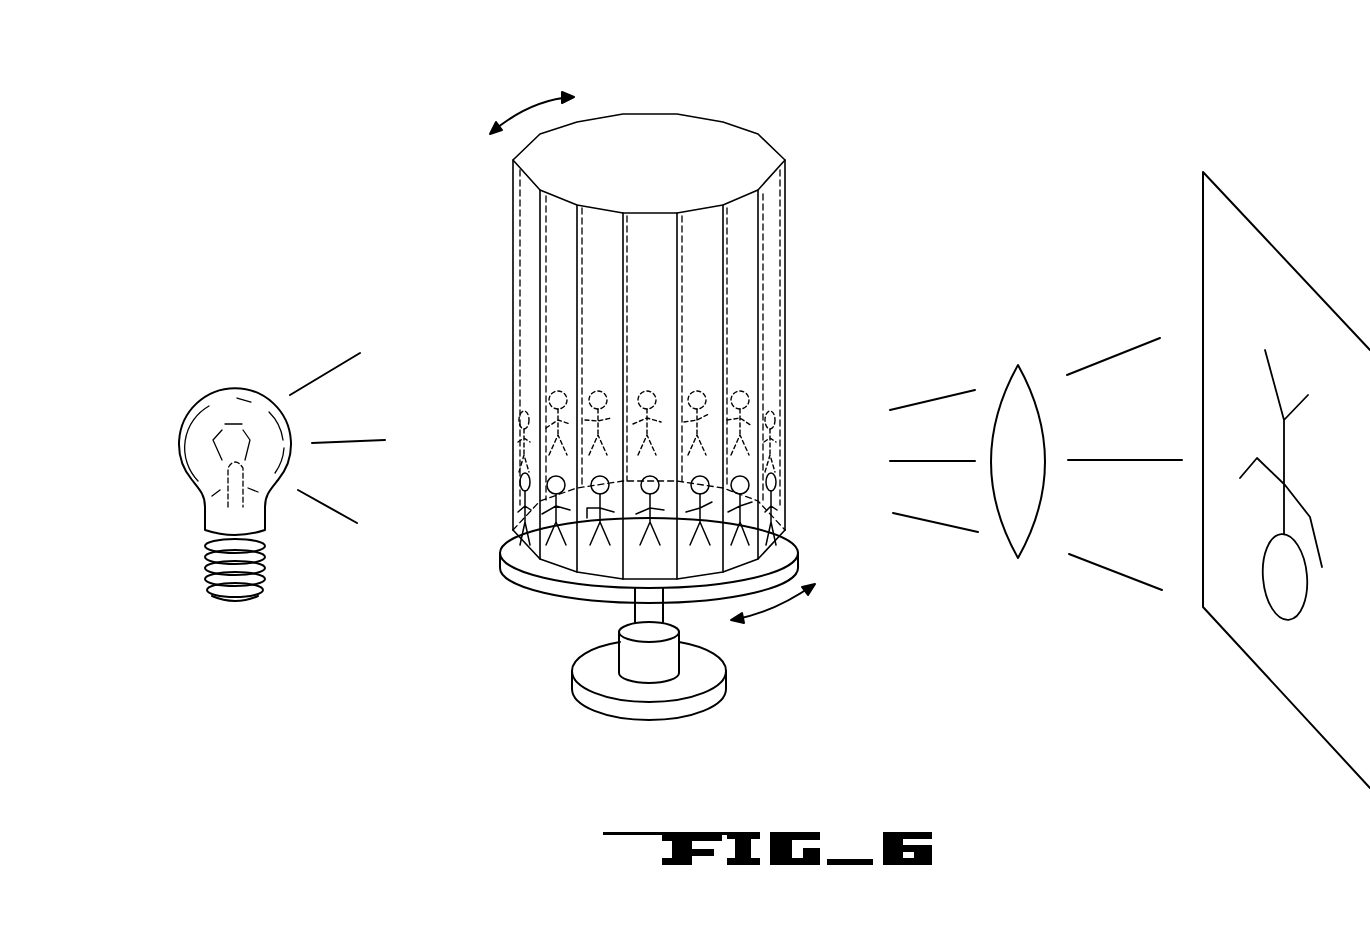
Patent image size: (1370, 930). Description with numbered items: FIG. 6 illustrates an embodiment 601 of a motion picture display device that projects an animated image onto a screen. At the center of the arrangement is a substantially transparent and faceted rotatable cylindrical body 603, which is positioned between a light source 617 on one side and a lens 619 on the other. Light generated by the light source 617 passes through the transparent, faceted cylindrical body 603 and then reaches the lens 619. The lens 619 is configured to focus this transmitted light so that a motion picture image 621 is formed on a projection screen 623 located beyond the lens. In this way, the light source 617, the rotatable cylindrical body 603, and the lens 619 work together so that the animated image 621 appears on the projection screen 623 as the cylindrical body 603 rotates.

The embodiment 601 is at (1142, 59).
The cylindrical body 603 is at (698, 133).
The light source 617 is at (221, 393).
The lens 619 is at (1018, 366).
The animated image 621 is at (1268, 602).
The projection screen 623 is at (1332, 718).